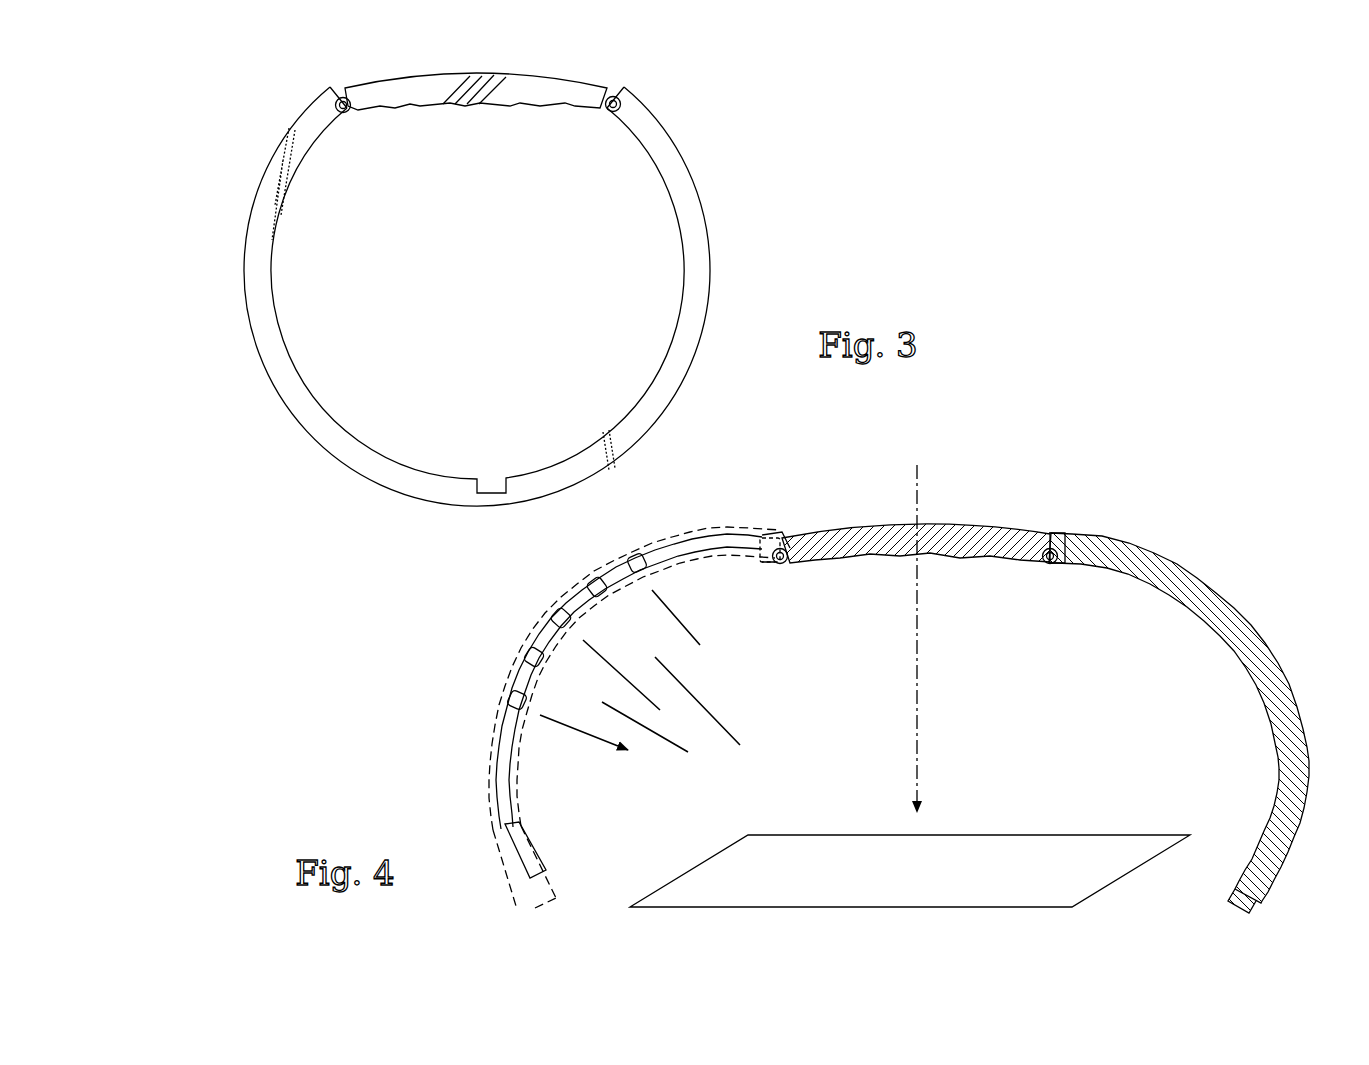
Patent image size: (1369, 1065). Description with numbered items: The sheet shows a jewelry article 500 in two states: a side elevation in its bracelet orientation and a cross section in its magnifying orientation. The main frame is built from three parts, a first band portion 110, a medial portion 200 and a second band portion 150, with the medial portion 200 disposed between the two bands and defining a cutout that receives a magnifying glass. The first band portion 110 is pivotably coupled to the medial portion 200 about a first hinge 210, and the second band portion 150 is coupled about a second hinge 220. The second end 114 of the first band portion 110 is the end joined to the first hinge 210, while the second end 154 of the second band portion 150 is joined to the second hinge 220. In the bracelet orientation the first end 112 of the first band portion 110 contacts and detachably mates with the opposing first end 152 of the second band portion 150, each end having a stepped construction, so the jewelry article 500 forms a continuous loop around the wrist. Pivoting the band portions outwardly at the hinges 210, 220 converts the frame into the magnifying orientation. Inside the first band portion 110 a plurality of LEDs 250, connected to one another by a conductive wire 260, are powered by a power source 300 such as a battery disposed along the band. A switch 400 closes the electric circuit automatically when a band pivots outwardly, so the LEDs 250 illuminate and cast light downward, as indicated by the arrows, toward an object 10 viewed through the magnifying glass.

In FIG. 4, the object 10 is at (1068, 836).
In FIG. 3, the first band portion 110 is at (262, 183).
In FIG. 4, the first band portion 110 is at (490, 732).
In FIG. 4, the first end of first band portion 112 is at (535, 905).
In FIG. 4, the second end of first band portion 114 is at (755, 545).
In FIG. 3, the second band portion 150 is at (712, 220).
In FIG. 4, the second band portion 150 is at (1282, 655).
In FIG. 4, the first end of second band portion 152 is at (1252, 912).
In FIG. 4, the second end of second band portion 154 is at (1050, 533).
In FIG. 3, the medial portion 200 is at (507, 72).
In FIG. 3, the first hinge 210 is at (352, 114).
In FIG. 4, the first hinge 210 is at (790, 565).
In FIG. 3, the second hinge 220 is at (606, 113).
In FIG. 4, the second hinge 220 is at (1052, 566).
In FIG. 4, the LEDs 250 is at (513, 694).
In FIG. 4, the conductive wire 260 is at (692, 530).
In FIG. 4, the power source 300 is at (510, 855).
In FIG. 4, the switch 400 is at (768, 567).
In FIG. 3, the jewelry article 500 is at (703, 88).
In FIG. 4, the jewelry article 500 is at (1222, 571).